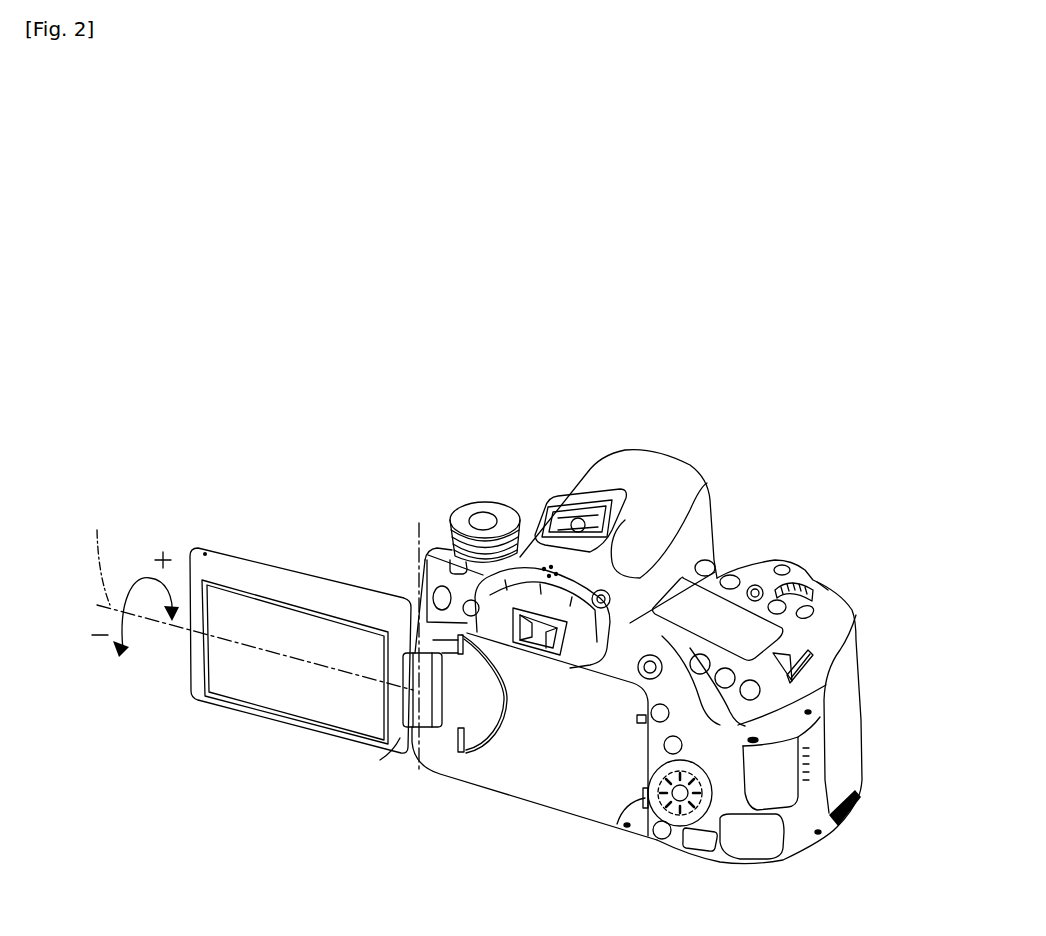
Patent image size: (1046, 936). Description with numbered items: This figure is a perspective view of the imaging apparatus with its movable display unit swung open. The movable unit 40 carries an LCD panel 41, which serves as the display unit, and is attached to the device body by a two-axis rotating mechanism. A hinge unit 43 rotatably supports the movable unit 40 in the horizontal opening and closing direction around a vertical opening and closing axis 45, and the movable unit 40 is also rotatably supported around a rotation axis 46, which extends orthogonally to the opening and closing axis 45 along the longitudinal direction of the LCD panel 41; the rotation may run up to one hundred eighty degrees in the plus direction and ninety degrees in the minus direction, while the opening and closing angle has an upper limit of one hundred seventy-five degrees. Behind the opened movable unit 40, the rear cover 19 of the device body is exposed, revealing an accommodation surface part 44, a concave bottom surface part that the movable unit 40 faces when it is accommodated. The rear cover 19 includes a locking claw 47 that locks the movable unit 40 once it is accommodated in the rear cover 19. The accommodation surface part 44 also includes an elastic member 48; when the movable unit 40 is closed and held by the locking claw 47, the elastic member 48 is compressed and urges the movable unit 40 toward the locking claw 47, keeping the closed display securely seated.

The rear cover 19 is at (715, 572).
The movable unit 40 is at (232, 712).
The LCD panel 41 is at (303, 698).
The hinge unit 43 is at (413, 706).
The accommodation surface part 44 is at (531, 742).
The opening and closing axis 45 is at (415, 558).
The rotation axis 46 is at (247, 598).
The locking claw 47 is at (633, 720).
The elastic member 48 is at (643, 802).